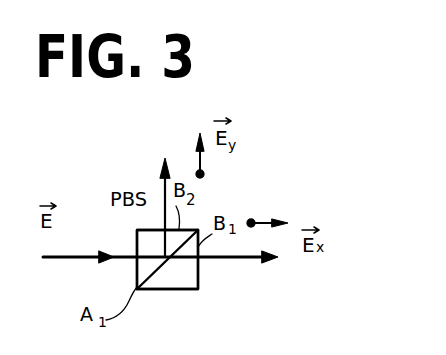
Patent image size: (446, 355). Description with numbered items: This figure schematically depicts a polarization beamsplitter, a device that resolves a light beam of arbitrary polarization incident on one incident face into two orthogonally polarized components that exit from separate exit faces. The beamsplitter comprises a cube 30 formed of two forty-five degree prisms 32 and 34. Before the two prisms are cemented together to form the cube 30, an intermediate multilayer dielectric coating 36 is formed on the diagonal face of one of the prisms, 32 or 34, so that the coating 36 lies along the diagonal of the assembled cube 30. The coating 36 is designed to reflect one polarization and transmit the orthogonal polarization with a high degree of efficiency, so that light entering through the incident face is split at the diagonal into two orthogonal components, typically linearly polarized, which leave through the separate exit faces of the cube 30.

The cube 30 is at (198, 229).
The 45° prism 32 is at (185, 273).
The 45° prism 34 is at (141, 244).
The multilayer dielectric coating 36 is at (198, 233).